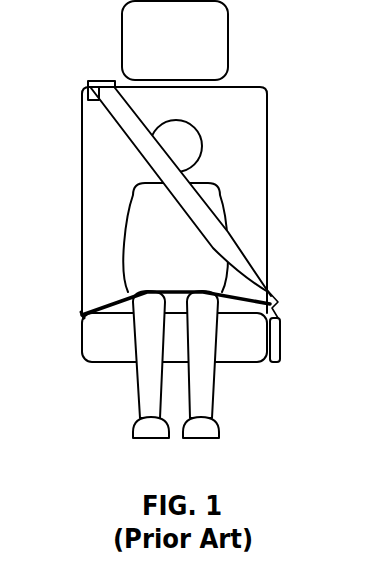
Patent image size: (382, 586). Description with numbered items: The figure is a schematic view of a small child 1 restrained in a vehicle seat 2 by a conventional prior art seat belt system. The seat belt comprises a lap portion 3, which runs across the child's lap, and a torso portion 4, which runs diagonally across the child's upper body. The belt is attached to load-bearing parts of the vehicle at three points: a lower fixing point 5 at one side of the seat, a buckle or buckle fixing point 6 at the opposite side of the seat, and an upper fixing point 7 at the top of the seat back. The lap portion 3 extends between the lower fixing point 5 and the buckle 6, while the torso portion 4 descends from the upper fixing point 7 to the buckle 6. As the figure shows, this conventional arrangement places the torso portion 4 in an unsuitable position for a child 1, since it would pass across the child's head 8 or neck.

The small child 1 is at (212, 258).
The vehicle seat 2 is at (255, 140).
The lap portion 3 is at (95, 306).
The torso portion 4 is at (243, 265).
The lower fixing point 5 is at (83, 316).
The buckle or buckle fixing point 6 is at (281, 359).
The upper fixing point 7 is at (100, 82).
The child's head 8 is at (190, 139).